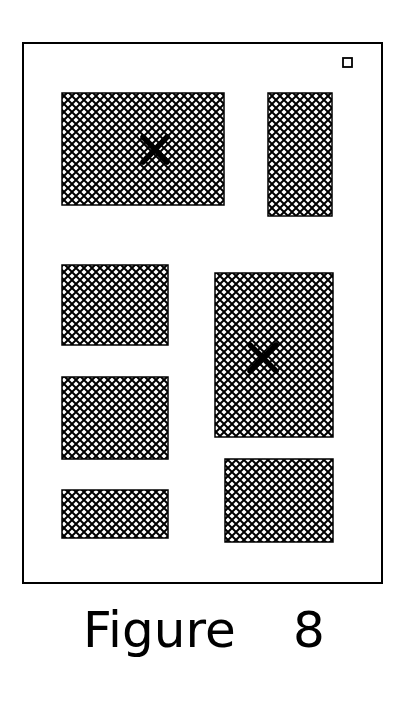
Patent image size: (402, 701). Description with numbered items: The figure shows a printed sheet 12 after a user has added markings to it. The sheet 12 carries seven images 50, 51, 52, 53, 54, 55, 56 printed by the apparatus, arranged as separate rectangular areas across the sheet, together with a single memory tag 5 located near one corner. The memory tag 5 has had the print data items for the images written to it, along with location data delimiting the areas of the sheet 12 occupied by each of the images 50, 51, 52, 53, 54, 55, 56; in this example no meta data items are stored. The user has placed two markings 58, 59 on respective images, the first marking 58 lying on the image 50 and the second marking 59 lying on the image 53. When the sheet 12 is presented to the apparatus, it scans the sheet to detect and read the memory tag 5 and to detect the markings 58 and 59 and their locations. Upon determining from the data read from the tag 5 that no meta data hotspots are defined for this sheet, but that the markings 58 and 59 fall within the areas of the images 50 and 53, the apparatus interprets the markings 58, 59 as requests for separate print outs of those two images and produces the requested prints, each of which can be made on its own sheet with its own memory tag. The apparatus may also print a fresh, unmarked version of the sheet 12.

The sheet 12 is at (68, 43).
The memory tag 5 is at (340, 63).
The image 50 is at (118, 205).
The image 51 is at (163, 265).
The image 52 is at (267, 202).
The image 53 is at (272, 283).
The image 54 is at (167, 448).
The image 55 is at (125, 538).
The image 56 is at (282, 542).
The marking 58 is at (152, 138).
The marking 59 is at (280, 344).